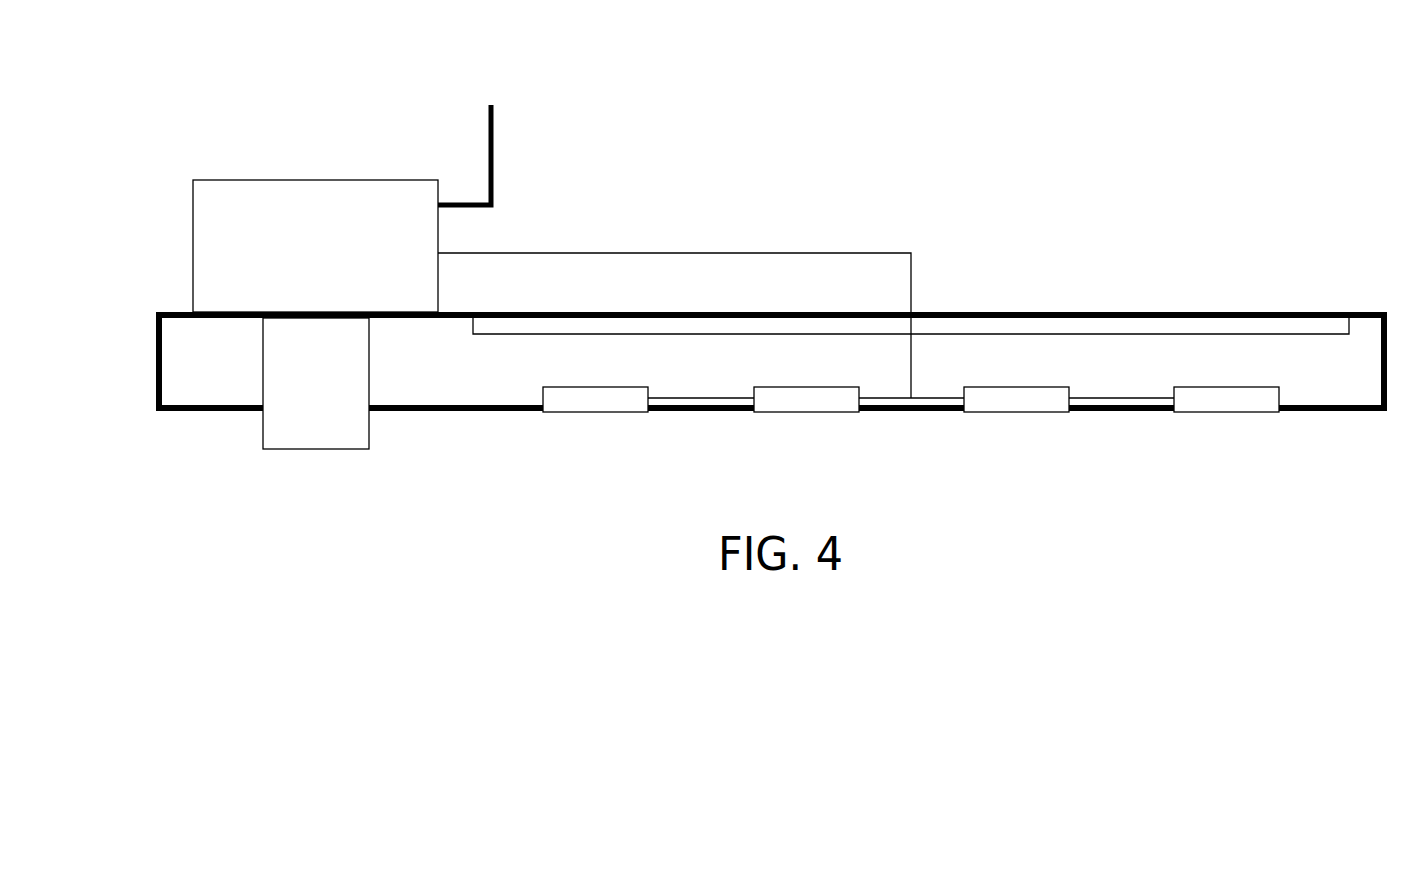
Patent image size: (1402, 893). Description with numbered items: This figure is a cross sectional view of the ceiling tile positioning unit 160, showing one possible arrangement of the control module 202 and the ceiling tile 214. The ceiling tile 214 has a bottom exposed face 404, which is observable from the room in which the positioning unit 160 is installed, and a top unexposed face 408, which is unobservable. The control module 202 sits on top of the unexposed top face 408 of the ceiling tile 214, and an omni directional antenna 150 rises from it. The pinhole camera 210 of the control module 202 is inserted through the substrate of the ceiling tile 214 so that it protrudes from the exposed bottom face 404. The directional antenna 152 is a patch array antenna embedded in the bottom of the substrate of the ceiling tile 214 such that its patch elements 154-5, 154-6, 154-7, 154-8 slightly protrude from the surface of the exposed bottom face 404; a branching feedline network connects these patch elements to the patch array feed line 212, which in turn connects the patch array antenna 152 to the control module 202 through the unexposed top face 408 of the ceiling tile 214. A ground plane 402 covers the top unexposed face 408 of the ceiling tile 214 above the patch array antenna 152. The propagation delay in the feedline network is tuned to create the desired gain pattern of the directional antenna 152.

The ceiling tile positioning unit 160 is at (168, 86).
The omni directional antenna 150 is at (493, 153).
The control module 202 is at (334, 273).
The pinhole camera 210 is at (335, 421).
The patch array feed line 212 is at (675, 253).
The ceiling tile 214 is at (156, 363).
The ground plane 402 is at (1322, 322).
The bottom exposed face 404 is at (452, 412).
The top unexposed face 408 is at (1368, 311).
The directional antenna 152 is at (1014, 443).
The patch element 154-5 is at (592, 412).
The patch element 154-6 is at (803, 412).
The patch element 154-7 is at (1043, 412).
The patch element 154-8 is at (1224, 412).